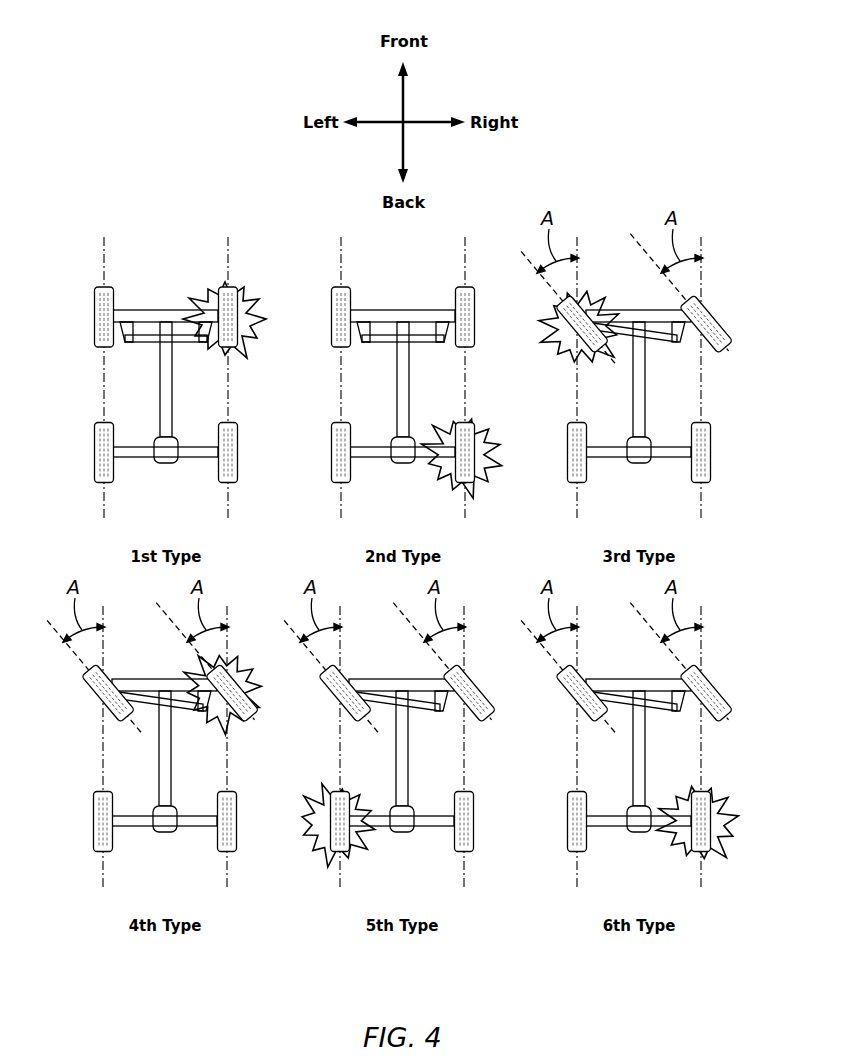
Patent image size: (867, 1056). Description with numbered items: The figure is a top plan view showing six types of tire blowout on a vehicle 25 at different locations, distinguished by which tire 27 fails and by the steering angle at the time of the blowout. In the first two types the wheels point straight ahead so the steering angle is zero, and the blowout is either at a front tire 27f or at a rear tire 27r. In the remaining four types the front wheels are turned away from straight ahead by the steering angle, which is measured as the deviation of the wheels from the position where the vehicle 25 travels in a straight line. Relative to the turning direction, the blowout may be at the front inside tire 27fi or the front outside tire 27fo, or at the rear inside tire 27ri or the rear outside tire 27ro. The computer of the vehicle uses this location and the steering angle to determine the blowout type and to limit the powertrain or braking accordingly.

The vehicle 25 is at (401, 571).
The tire 27 is at (404, 563).
The front tire 27f is at (168, 305).
The rear tire 27r is at (480, 426).
The front inside tire 27fi is at (562, 347).
The front outside tire 27fo is at (235, 655).
The rear inside tire 27ri is at (325, 830).
The rear outside tire 27ro is at (713, 852).